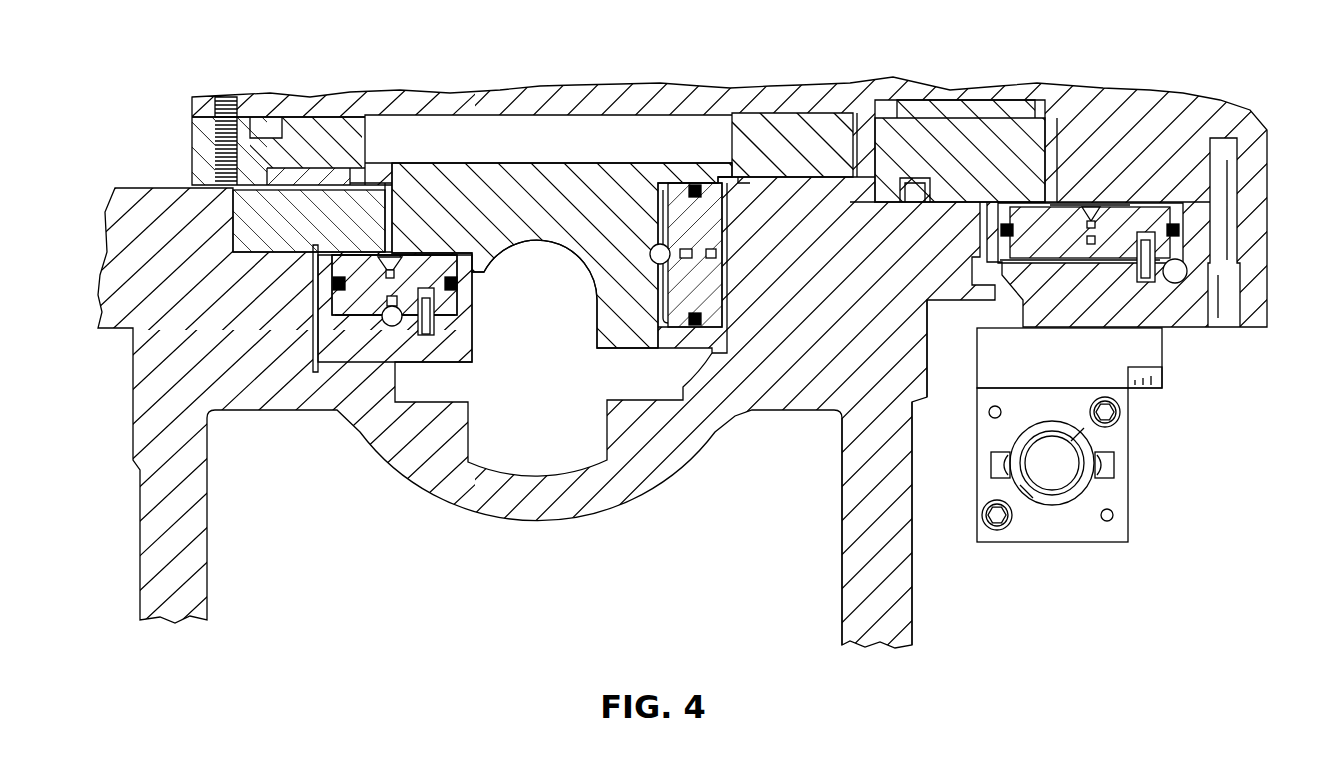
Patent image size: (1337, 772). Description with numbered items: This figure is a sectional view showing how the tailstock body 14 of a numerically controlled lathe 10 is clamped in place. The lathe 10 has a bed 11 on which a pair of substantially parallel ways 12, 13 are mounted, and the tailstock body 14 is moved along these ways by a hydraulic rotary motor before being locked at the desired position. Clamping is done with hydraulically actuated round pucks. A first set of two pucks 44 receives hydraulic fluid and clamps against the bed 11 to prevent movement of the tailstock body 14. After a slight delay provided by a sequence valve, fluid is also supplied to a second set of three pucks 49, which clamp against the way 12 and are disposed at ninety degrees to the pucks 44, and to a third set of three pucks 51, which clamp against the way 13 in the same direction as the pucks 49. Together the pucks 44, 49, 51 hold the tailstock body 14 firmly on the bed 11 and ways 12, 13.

The numerically controlled lathe 10 is at (412, 508).
The bed 11 is at (762, 413).
The way 12 is at (998, 140).
The way 13 is at (343, 212).
The tailstock body 14 is at (590, 342).
The round pucks 44 is at (660, 293).
The round pucks 49 is at (1035, 257).
The round pucks 51 is at (352, 320).